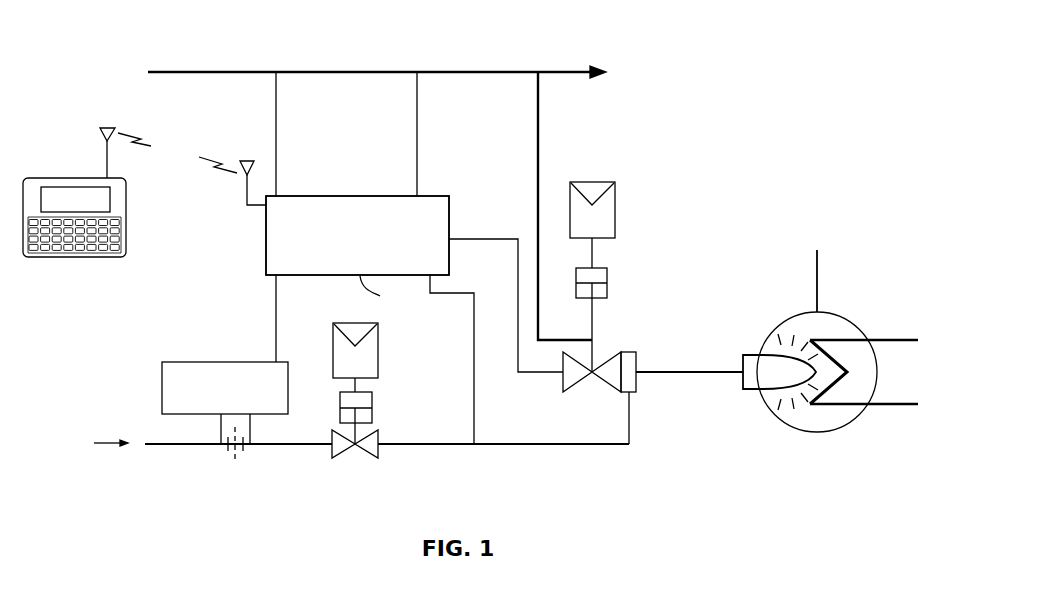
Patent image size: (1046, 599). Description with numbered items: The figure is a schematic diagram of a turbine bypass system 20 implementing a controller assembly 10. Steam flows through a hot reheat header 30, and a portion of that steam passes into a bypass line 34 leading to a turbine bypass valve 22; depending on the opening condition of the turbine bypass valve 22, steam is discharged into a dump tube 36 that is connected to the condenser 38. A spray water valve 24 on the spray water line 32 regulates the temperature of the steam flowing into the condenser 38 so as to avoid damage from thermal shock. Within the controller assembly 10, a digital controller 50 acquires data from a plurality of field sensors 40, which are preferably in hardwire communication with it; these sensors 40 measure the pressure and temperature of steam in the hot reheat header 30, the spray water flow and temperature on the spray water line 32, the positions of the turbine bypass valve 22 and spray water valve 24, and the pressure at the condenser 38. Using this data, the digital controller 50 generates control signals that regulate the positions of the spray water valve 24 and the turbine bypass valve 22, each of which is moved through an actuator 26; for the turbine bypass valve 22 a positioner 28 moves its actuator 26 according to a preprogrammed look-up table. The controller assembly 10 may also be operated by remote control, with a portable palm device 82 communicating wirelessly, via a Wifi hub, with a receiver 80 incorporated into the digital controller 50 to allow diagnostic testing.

The controller assembly 10 is at (347, 268).
The turbine bypass system 20 is at (657, 70).
The turbine bypass valve 22 is at (575, 382).
The spray water valve 24 is at (345, 371).
The actuator 26 is at (608, 276).
The positioner 28 is at (582, 231).
The hot reheat header 30 is at (168, 72).
The spray water line 32 is at (283, 446).
The bypass line 34 is at (539, 108).
The dump tube 36 is at (708, 370).
The condenser 38 is at (844, 316).
The field sensors 40 is at (273, 72).
The digital controller 50 is at (266, 230).
The receiver 80 is at (266, 210).
The palm device 82 is at (48, 178).